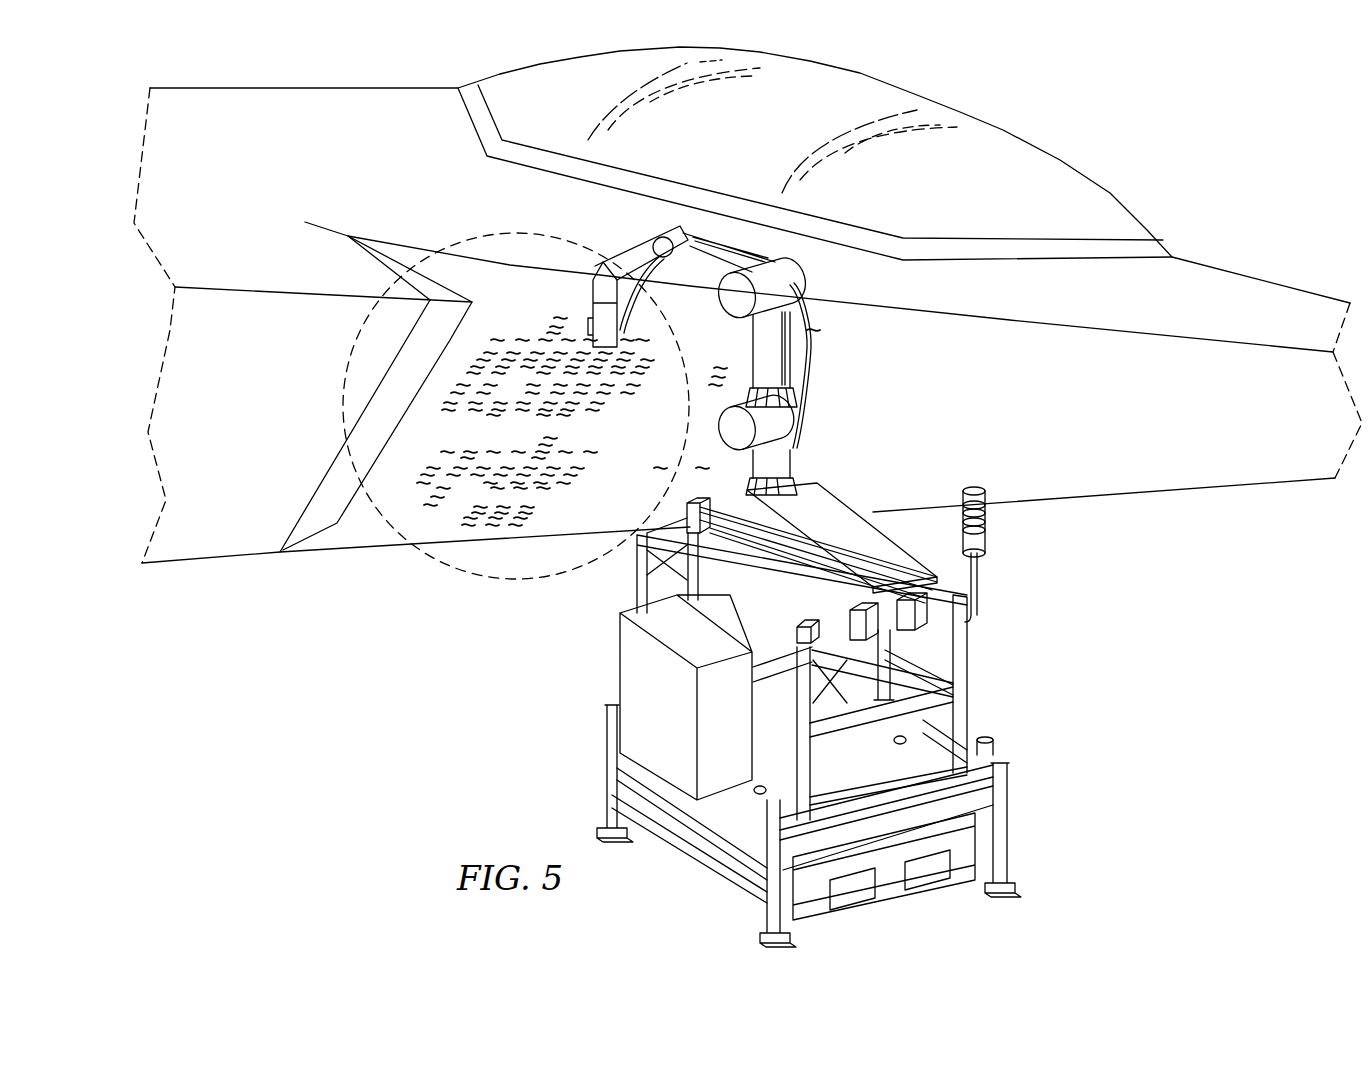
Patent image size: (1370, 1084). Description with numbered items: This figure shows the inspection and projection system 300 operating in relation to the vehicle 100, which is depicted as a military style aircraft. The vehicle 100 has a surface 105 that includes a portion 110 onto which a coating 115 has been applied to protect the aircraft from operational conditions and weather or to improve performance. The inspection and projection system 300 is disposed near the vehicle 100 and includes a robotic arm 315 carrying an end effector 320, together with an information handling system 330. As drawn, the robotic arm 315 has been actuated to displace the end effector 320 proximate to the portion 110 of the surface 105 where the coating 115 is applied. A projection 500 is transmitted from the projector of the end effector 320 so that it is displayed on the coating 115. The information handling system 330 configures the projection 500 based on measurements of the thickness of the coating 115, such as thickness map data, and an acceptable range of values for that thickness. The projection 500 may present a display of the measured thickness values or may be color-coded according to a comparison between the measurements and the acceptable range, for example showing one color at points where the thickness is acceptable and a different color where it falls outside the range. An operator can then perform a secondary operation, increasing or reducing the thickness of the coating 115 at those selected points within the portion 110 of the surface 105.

The vehicle 100 is at (748, 348).
The surface 105 is at (383, 117).
The portion 110 is at (510, 582).
The coating 115 is at (403, 474).
The inspection and projection system 300 is at (818, 715).
The robotic arm 315 is at (773, 350).
The end effector 320 is at (588, 306).
The information handling system 330 is at (645, 658).
The projection 500 is at (490, 490).